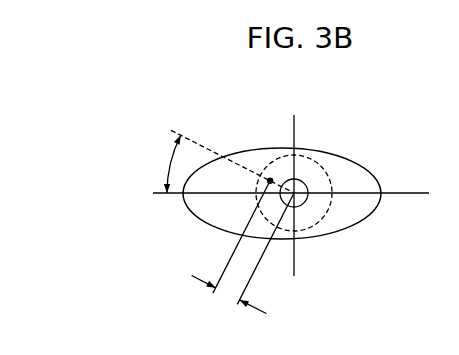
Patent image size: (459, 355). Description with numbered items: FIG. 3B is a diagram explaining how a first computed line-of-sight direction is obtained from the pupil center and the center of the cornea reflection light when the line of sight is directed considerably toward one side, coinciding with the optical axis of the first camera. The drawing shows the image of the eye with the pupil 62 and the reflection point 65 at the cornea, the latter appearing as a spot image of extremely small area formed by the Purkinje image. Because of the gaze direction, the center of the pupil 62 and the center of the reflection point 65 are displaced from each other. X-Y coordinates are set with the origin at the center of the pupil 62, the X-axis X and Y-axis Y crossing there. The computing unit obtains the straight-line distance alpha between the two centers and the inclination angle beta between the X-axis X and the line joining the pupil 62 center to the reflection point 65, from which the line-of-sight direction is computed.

The pupil 62 is at (305, 181).
The reflection point 65 is at (270, 178).
The X-axis X is at (299, 194).
The Y-axis Y is at (294, 185).